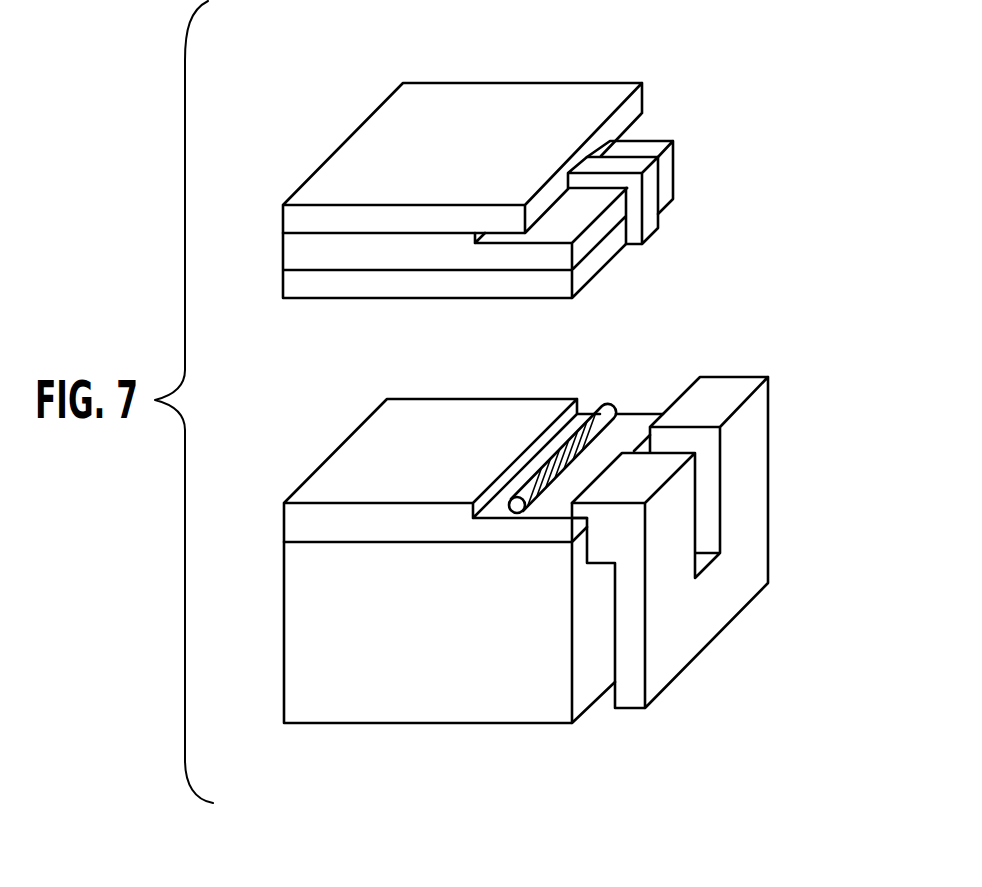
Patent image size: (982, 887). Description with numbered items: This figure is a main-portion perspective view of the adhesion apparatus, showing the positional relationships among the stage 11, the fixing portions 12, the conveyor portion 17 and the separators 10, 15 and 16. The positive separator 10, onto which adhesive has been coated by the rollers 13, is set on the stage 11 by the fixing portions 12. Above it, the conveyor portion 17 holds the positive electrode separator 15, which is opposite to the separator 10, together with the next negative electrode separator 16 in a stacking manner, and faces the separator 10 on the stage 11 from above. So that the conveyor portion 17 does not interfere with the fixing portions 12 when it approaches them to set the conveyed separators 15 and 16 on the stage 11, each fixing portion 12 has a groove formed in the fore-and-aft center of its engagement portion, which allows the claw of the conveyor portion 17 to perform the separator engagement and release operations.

The positive separator 10 is at (488, 412).
The stage 11 is at (415, 708).
The fixing portions 12 is at (762, 486).
The rollers 13 is at (612, 403).
The positive electrode separator 15 is at (668, 185).
The negative electrode separator 16 is at (668, 156).
The conveyor portion 17 is at (557, 98).